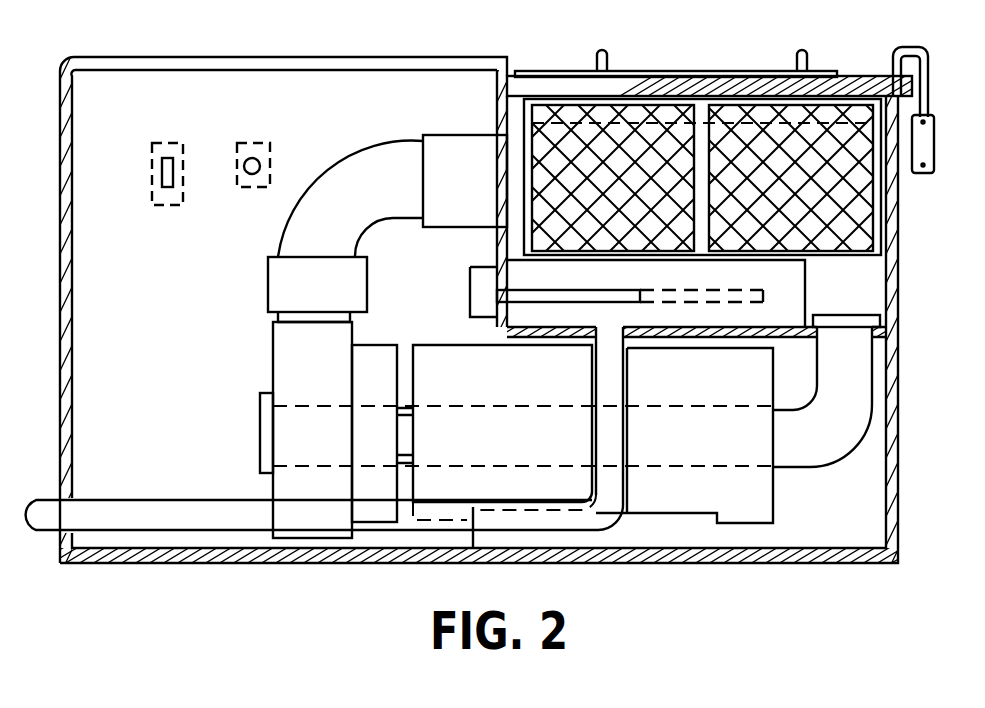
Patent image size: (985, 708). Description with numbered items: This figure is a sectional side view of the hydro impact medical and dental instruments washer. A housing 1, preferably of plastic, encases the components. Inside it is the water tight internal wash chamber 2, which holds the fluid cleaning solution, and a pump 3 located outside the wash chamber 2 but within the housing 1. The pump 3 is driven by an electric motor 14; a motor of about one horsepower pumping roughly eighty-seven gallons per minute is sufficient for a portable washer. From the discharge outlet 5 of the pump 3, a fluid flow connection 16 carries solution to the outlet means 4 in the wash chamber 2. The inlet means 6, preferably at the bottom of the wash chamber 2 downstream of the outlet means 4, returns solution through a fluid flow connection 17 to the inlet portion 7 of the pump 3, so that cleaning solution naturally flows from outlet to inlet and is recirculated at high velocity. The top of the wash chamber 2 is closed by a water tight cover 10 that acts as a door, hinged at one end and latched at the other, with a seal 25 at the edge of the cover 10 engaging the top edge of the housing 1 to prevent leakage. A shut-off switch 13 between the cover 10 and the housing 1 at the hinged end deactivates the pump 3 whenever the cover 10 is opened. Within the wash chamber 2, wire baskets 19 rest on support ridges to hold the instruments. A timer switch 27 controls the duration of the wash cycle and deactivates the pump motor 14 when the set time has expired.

The housing 1 is at (900, 202).
The internal wash chamber 2 is at (873, 265).
The pump 3 is at (320, 368).
The outlet means 4 is at (443, 150).
The discharge outlet 5 is at (283, 282).
The inlet means 6 is at (852, 322).
The inlet portion 7 is at (225, 415).
The cover 10 is at (855, 71).
The shut-off switch 13 is at (497, 102).
The electric motor 14 is at (742, 493).
The fluid flow connection 16 is at (317, 228).
The fluid flow connection 17 is at (833, 427).
The wire basket 19 is at (842, 240).
The seal 25 is at (157, 150).
The timer switch 27 is at (243, 150).